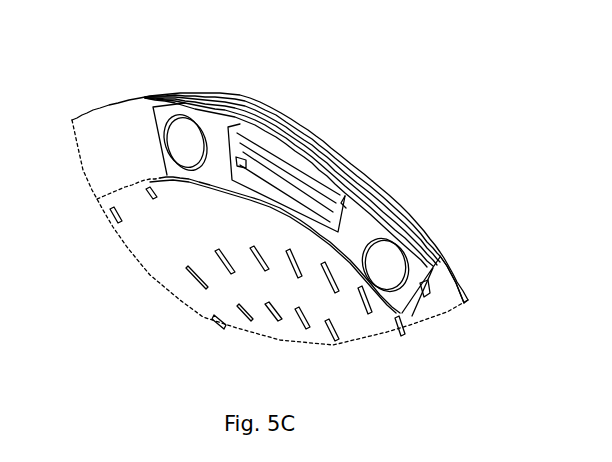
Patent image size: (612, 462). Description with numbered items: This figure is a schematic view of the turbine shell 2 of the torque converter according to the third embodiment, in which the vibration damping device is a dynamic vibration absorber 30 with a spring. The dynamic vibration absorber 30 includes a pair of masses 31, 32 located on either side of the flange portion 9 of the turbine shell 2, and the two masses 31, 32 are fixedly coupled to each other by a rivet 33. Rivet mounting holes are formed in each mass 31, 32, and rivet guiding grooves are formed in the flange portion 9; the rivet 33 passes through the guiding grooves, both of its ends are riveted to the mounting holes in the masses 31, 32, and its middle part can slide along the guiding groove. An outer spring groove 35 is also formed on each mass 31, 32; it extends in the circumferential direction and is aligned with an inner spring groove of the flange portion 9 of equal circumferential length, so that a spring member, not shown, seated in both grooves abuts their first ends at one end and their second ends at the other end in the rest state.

The turbine shell 2 is at (150, 275).
The flange portion 9 is at (98, 148).
The dynamic vibration absorber 30 is at (167, 59).
The mass 31 is at (187, 117).
The mass 32 is at (440, 250).
The rivet 33 is at (383, 272).
The outer spring groove 35 is at (258, 153).